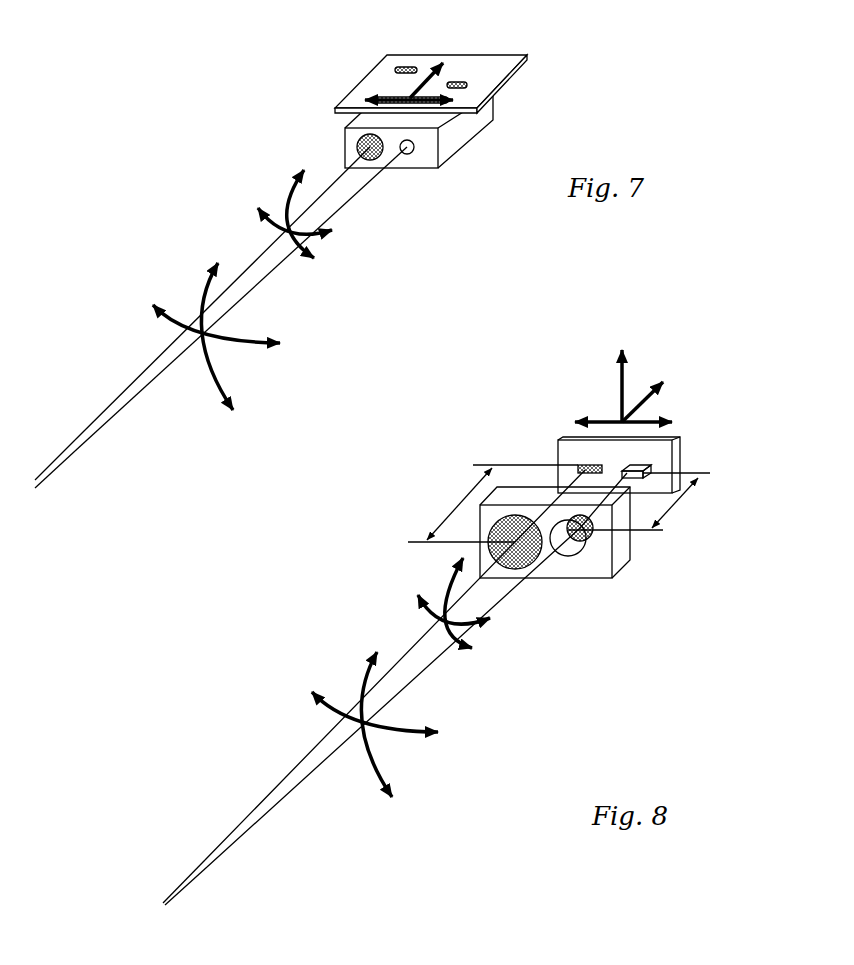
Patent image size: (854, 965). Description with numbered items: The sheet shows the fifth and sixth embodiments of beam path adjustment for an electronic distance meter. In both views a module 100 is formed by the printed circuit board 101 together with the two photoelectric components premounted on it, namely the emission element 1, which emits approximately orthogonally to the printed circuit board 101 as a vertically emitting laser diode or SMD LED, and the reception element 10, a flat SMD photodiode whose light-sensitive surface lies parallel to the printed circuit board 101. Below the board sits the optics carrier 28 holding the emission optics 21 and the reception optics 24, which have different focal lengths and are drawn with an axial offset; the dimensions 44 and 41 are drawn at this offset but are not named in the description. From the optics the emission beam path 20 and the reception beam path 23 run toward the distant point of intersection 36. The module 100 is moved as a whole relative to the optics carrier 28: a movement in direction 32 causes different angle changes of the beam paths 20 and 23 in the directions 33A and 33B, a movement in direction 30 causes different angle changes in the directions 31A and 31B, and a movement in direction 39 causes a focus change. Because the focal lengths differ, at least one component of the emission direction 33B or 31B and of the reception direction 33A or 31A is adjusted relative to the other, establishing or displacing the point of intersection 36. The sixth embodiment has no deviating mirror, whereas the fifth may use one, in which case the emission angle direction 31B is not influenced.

In FIG. 7, the emission element 1 is at (535, 59).
In FIG. 8, the emission element 1 is at (661, 525).
In FIG. 7, the reception element 10 is at (328, 52).
In FIG. 8, the reception element 10 is at (517, 443).
In FIG. 7, the emission beam path 20 is at (251, 299).
In FIG. 8, the emission beam path 20 is at (417, 670).
In FIG. 7, the emission optics 21 is at (447, 171).
In FIG. 8, the emission optics 21 is at (617, 565).
In FIG. 7, the reception beam path 23 is at (222, 293).
In FIG. 8, the reception beam path 23 is at (395, 665).
In FIG. 7, the reception optics 24 is at (314, 141).
In FIG. 8, the reception optics 24 is at (565, 585).
In FIG. 7, the optics carrier 28 is at (448, 130).
In FIG. 8, the optics carrier 28 is at (558, 557).
In FIG. 7, the movement direction 30 is at (405, 56).
In FIG. 8, the movement direction 30 is at (577, 365).
In FIG. 7, the reception direction component 31A is at (245, 208).
In FIG. 8, the reception direction component 31A is at (501, 637).
In FIG. 7, the emission angle direction 31B is at (154, 336).
In FIG. 8, the emission angle direction 31B is at (416, 744).
In FIG. 7, the movement direction 32 is at (346, 81).
In FIG. 8, the movement direction 32 is at (599, 384).
In FIG. 7, the reception direction component 33A is at (250, 215).
In FIG. 8, the reception direction component 33A is at (491, 631).
In FIG. 7, the emission direction component 33B is at (181, 312).
In FIG. 8, the emission direction component 33B is at (392, 740).
In FIG. 7, the point of intersection 36 is at (96, 497).
In FIG. 8, the point of intersection 36 is at (156, 864).
In FIG. 8, the movement direction 39 is at (611, 348).
In FIG. 8, the offset distance 41 is at (639, 503).
In FIG. 8, the offset distance 44 is at (493, 503).
In FIG. 7, the module 100 is at (436, 108).
In FIG. 8, the module 100 is at (543, 465).
In FIG. 7, the printed circuit board 101 is at (381, 84).
In FIG. 8, the printed circuit board 101 is at (573, 436).